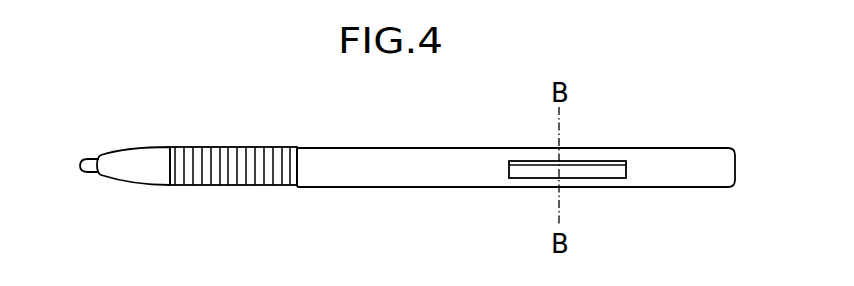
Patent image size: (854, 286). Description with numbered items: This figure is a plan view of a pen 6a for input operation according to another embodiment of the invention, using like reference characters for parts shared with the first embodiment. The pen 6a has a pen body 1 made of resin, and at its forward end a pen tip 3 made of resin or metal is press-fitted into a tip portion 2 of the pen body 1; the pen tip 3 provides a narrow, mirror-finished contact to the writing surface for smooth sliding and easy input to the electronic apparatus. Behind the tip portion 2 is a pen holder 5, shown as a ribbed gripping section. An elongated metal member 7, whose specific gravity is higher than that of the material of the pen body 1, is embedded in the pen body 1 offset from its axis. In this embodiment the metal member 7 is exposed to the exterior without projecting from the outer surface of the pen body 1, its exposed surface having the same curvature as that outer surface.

The pen body 1 is at (485, 178).
The tip portion 2 is at (153, 177).
The pen tip 3 is at (88, 173).
The pen holder 5 is at (272, 186).
The pen 6a is at (391, 147).
The metal member 7 is at (605, 180).